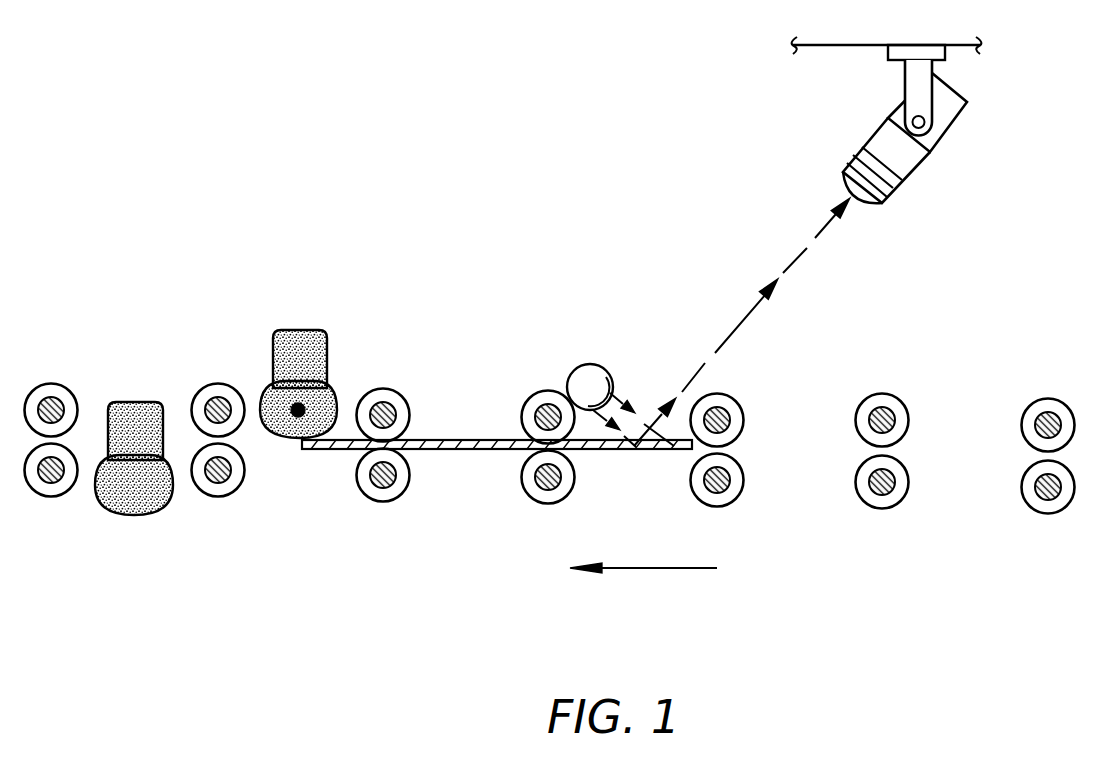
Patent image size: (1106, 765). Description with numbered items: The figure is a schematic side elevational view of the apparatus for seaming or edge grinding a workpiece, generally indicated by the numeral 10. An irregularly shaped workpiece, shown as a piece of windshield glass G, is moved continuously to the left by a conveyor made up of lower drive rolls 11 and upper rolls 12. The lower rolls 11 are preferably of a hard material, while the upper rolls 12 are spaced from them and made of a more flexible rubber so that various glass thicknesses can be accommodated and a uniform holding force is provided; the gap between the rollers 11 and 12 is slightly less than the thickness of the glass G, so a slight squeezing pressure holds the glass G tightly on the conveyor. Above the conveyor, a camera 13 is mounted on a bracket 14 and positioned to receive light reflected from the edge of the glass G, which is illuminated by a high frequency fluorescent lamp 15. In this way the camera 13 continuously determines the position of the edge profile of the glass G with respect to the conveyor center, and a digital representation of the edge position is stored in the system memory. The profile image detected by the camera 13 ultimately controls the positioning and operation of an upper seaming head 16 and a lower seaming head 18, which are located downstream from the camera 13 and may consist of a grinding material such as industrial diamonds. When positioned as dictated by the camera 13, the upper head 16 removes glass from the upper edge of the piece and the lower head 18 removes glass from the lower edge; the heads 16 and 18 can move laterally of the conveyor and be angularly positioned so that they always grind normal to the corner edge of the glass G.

The apparatus for seaming or edge grinding a workpiece 10 is at (680, 205).
The lower drive rolls 11 is at (385, 503).
The upper rolls 12 is at (213, 392).
The camera 13 is at (903, 158).
The bracket 14 is at (912, 84).
The high frequency fluorescent lamp 15 is at (600, 377).
The upper seaming head 16 is at (330, 392).
The lower seaming head 18 is at (143, 508).
The windshield glass G is at (478, 442).